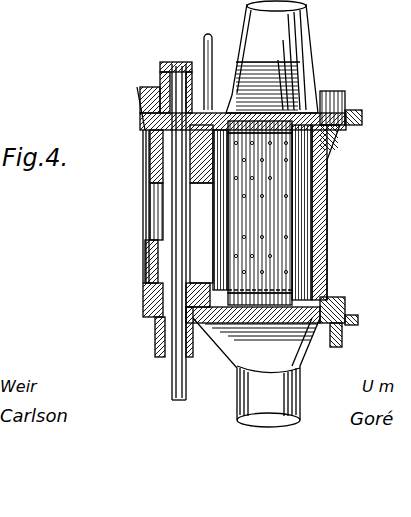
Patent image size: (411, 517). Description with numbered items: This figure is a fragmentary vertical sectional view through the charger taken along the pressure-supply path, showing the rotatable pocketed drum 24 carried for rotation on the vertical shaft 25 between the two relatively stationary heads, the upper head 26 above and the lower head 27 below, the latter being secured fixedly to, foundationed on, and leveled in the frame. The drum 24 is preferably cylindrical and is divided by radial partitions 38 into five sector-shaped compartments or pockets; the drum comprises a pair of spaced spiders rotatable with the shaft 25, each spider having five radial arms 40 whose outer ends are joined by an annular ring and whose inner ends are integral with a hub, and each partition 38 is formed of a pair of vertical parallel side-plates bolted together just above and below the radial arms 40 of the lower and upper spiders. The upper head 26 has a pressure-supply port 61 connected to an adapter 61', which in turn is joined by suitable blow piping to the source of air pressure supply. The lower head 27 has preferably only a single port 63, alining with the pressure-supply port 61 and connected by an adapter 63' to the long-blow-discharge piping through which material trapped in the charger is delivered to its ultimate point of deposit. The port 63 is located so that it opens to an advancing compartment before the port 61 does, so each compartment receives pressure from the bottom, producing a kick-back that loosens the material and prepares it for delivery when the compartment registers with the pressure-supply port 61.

The adapter 61' is at (289, 57).
The pressure-supply port 61 is at (351, 102).
The upper head 26 is at (343, 104).
The pocketed drum 24 is at (339, 224).
The radial partition 38 is at (260, 213).
The radial arm 40 is at (257, 176).
The vertical shaft 25 is at (176, 384).
The port 63 is at (259, 303).
The lower head 27 is at (343, 333).
The adapter 63' is at (265, 372).